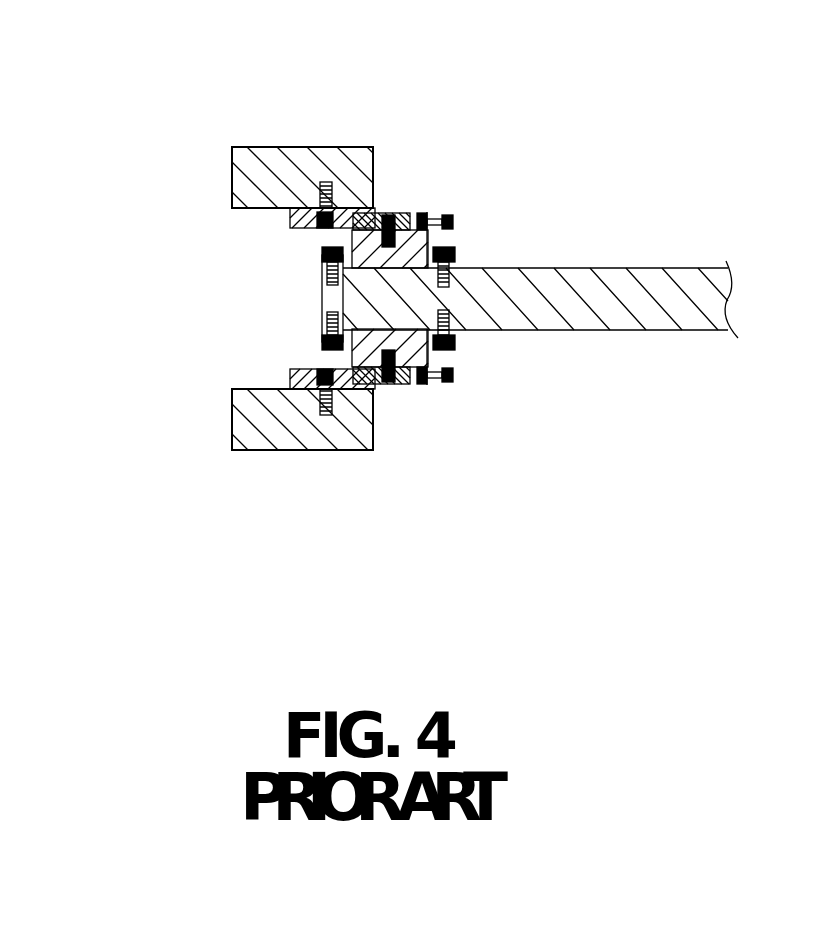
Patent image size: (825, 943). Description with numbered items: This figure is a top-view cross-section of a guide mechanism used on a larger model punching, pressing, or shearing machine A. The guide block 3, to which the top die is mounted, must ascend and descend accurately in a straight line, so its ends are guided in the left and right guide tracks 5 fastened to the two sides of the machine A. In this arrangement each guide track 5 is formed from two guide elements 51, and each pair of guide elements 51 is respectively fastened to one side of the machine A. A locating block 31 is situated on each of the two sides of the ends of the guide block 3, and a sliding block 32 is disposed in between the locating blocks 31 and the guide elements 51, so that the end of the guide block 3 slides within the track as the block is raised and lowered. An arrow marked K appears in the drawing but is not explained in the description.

The shaft 3 is at (667, 293).
The clamping assembly 5 is at (226, 298).
The clamp plate 51 is at (290, 220).
The coupling flange 31 is at (407, 253).
The bolt 32 is at (372, 210).
The mounting block A is at (263, 155).
The direction of movement K is at (617, 162).